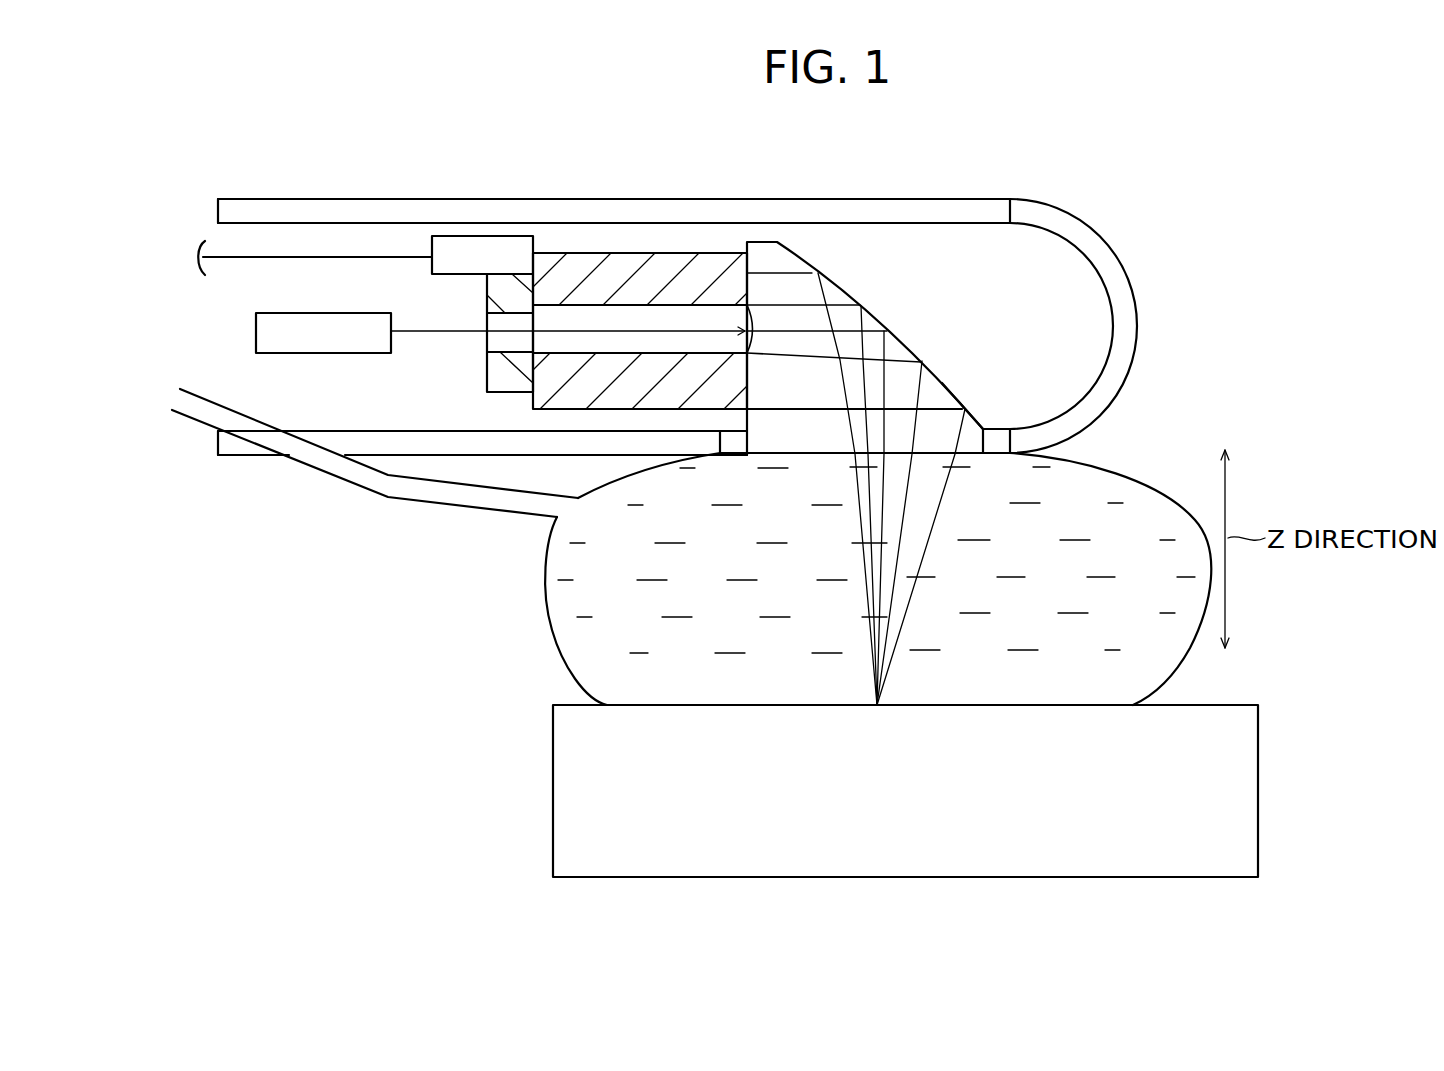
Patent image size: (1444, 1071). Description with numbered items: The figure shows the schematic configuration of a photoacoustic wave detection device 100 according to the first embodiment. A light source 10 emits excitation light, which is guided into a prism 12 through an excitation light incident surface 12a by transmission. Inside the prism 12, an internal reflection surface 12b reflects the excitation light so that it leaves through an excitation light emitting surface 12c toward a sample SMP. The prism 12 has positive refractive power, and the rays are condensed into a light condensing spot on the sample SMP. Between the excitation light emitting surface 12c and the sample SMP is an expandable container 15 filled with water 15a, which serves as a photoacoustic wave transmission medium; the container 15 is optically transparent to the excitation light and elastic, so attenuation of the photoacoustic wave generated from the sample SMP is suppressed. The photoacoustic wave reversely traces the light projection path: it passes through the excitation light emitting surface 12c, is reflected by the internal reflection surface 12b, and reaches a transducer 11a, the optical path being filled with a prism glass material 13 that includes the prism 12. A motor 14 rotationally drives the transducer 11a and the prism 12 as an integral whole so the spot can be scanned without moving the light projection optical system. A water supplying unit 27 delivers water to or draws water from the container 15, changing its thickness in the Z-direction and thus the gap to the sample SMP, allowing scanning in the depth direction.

The photoacoustic wave detection device 100 is at (1170, 148).
The motor 14 is at (500, 236).
The light source 10 is at (308, 313).
The transducer 11a is at (645, 252).
The prism 12 is at (852, 299).
The excitation light incident surface 12a is at (753, 318).
The internal reflection surface 12b is at (937, 388).
The excitation light emitting surface 12c is at (985, 437).
The prism glass material 13 is at (898, 353).
The container 15 is at (1117, 478).
The water 15a is at (1135, 530).
The water supplying unit 27 is at (190, 408).
The sample SMP is at (1260, 740).